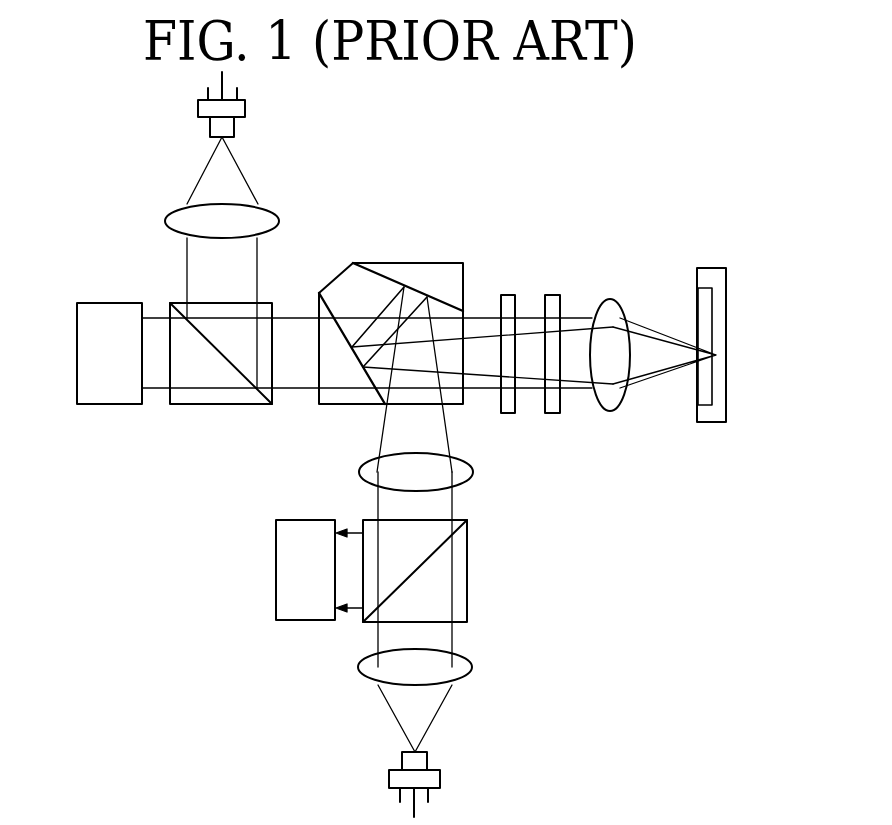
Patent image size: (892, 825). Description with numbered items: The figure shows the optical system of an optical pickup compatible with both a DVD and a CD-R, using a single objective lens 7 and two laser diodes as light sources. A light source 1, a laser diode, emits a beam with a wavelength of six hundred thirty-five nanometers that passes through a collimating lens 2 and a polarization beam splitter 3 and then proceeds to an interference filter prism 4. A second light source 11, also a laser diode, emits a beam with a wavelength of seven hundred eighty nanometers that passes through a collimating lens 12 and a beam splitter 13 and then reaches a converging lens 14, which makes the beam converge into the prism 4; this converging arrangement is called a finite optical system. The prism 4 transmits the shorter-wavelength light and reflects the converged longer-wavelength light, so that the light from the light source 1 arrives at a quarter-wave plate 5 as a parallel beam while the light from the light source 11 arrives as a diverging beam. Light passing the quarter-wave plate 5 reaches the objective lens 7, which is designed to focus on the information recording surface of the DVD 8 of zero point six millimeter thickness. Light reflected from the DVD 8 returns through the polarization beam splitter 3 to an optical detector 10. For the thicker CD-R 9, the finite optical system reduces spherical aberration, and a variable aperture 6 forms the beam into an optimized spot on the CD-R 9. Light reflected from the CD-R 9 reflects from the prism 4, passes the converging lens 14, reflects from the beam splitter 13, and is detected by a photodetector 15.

The light source 1 is at (245, 109).
The collimating lens 2 is at (279, 219).
The polarization beam splitter 3 is at (225, 405).
The interference filter prism 4 is at (413, 263).
The quarter-wave plate 5 is at (508, 295).
The variable aperture 6 is at (552, 413).
The objective lens 7 is at (611, 300).
The DVD 8 is at (703, 422).
The CD-R 9 is at (740, 292).
The optical detector 10 is at (77, 354).
The light source 11 is at (441, 780).
The collimating lens 12 is at (473, 668).
The beam splitter 13 is at (468, 578).
The converging lens 14 is at (485, 463).
The photodetector 15 is at (276, 569).